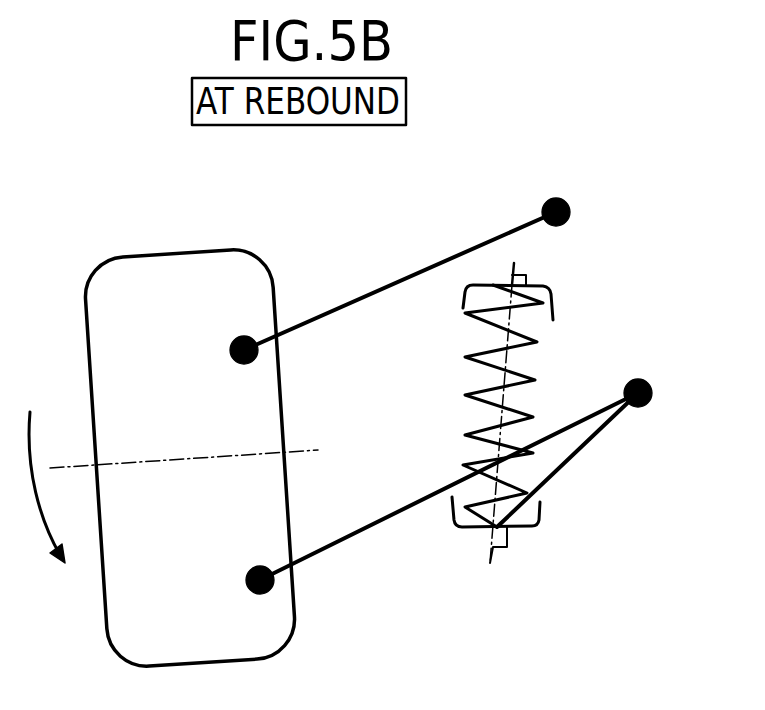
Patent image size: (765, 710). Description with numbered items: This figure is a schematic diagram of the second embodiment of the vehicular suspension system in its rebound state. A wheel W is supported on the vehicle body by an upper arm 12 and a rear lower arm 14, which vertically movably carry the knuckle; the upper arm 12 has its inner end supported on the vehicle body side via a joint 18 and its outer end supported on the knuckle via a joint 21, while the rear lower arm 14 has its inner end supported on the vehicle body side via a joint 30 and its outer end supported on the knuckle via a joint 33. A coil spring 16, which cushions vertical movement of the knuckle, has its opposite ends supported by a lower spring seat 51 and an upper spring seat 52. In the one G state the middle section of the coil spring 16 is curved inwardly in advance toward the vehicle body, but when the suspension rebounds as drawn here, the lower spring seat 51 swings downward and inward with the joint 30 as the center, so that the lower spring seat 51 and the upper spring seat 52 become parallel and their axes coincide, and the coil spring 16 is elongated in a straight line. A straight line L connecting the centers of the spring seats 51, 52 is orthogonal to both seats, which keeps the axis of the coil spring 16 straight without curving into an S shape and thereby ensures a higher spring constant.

The wheel W is at (172, 252).
The upper arm 12 is at (407, 275).
The rear lower arm 14 is at (397, 512).
The coil spring 16 is at (480, 390).
The joint 18 is at (560, 200).
The joint 21 is at (232, 338).
The joint 30 is at (648, 408).
The joint 33 is at (255, 566).
The lower spring seat 51 is at (470, 530).
The upper spring seat 52 is at (553, 306).
The straight line L is at (508, 358).